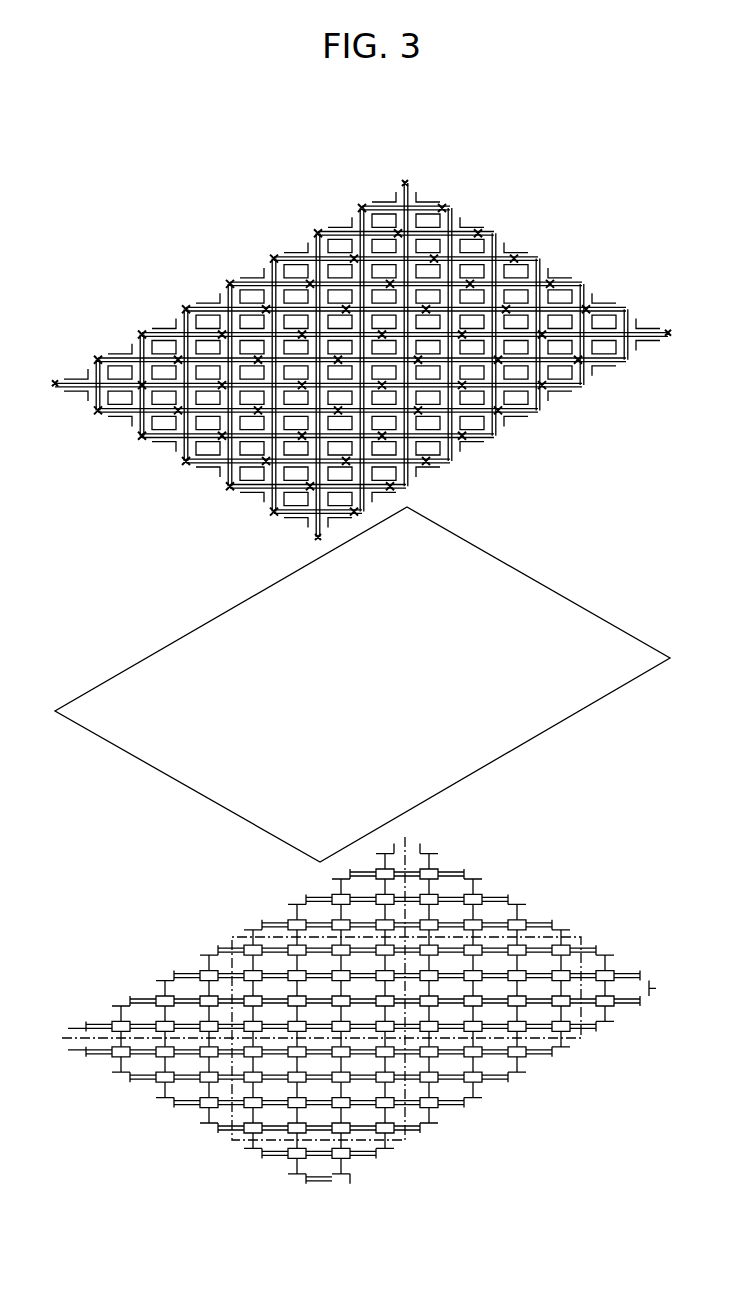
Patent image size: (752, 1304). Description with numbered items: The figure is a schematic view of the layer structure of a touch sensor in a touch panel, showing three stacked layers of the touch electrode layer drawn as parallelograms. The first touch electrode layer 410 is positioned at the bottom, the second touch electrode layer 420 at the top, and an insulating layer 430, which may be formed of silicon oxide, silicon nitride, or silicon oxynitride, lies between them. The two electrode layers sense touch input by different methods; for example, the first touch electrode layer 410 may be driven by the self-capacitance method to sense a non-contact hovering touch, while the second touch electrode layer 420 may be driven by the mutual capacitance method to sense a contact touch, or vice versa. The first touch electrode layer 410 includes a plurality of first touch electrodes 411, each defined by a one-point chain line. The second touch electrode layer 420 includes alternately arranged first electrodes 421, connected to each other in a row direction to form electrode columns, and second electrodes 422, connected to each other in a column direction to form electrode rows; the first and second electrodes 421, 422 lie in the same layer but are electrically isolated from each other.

The first touch electrode layer 410 is at (133, 948).
The first touch electrode 411 is at (583, 933).
The second touch electrode layer 420 is at (133, 303).
The first electrode 421 is at (404, 211).
The second electrode 422 is at (443, 220).
The insulating layer 430 is at (148, 628).